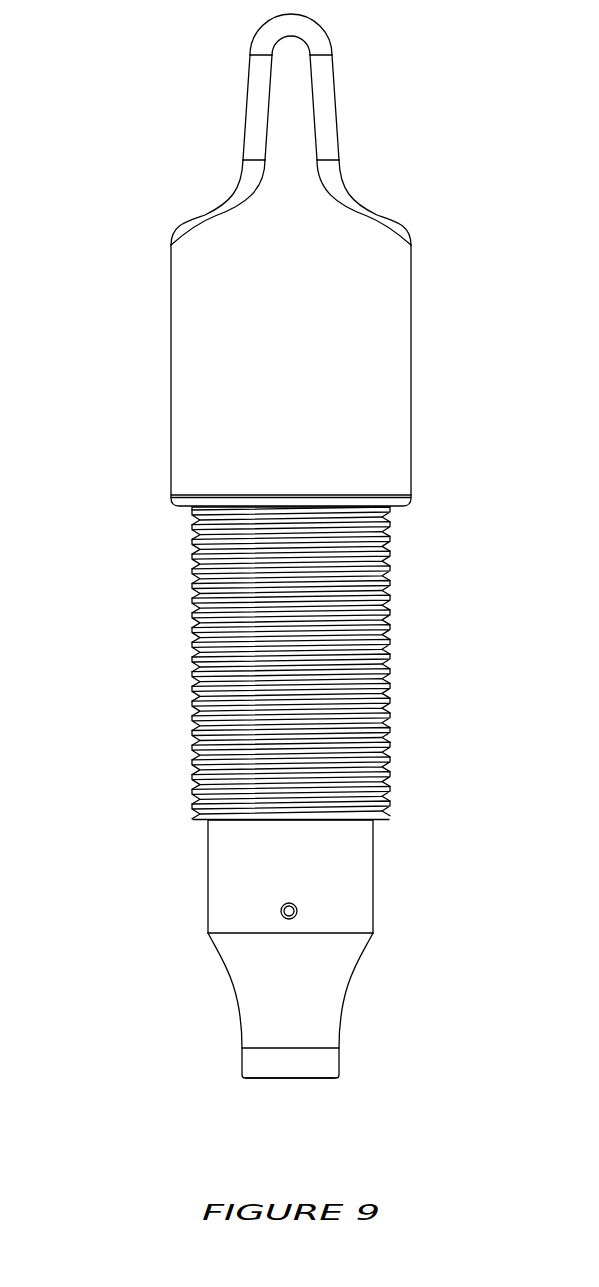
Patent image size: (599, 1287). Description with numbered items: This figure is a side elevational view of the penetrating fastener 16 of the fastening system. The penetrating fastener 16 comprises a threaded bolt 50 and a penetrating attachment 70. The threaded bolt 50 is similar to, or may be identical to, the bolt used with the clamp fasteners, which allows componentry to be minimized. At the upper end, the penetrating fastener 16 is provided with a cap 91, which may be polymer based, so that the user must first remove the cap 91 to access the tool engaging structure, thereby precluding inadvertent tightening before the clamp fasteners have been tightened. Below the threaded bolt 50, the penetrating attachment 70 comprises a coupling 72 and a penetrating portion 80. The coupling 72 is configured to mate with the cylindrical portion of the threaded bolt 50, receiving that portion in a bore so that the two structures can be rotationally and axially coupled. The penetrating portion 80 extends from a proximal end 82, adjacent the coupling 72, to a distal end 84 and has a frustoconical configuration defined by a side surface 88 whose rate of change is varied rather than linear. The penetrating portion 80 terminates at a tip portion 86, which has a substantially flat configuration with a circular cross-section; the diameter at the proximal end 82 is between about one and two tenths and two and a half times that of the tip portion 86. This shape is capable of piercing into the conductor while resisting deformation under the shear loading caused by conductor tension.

The penetrating fastener 16 is at (148, 612).
The cap 91 is at (130, 371).
The threaded bolt 50 is at (403, 648).
The penetrating attachment 70 is at (176, 939).
The coupling 72 is at (379, 870).
The proximal end 82 is at (208, 933).
The penetrating portion 80 is at (355, 993).
The side surface 88 is at (233, 988).
The distal end 84 is at (228, 1062).
The tip portion 86 is at (288, 1080).